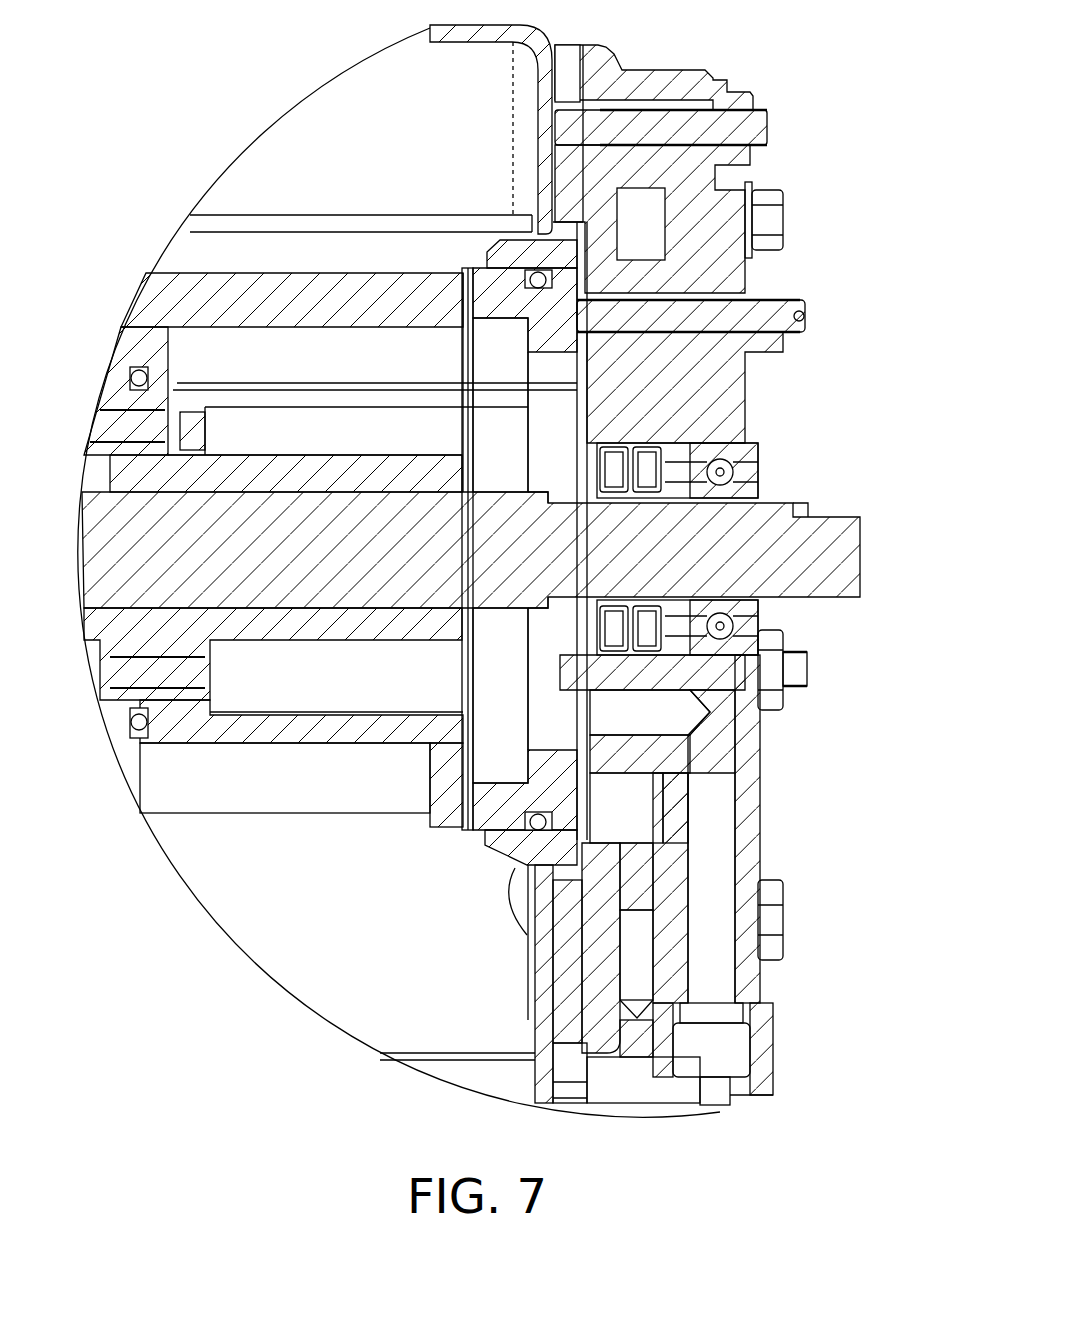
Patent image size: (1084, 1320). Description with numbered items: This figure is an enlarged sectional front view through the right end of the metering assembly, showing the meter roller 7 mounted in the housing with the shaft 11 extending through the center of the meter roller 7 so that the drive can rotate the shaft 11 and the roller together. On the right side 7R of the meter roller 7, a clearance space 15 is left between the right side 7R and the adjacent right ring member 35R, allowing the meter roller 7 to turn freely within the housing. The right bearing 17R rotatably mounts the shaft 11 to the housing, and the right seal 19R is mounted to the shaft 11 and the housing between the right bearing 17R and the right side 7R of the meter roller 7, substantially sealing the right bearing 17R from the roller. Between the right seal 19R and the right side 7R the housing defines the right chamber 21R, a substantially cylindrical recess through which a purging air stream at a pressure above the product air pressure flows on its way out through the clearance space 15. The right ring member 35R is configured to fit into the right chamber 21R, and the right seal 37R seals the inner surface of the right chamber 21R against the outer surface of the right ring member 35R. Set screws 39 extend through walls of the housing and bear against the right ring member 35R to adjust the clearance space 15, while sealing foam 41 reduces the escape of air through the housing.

The meter roller 7 is at (222, 815).
The right side of the meter roller 7R is at (463, 357).
The shaft 11 is at (790, 500).
The clearance spaces 15 is at (473, 268).
The right bearing 17R is at (745, 460).
The right seal 19R is at (645, 636).
The right chamber 21R is at (462, 775).
The right ring member 35R is at (483, 266).
The right seal (ring member seal) 37R is at (527, 823).
The set screws 39 is at (797, 298).
The sealing foam 41 is at (640, 843).